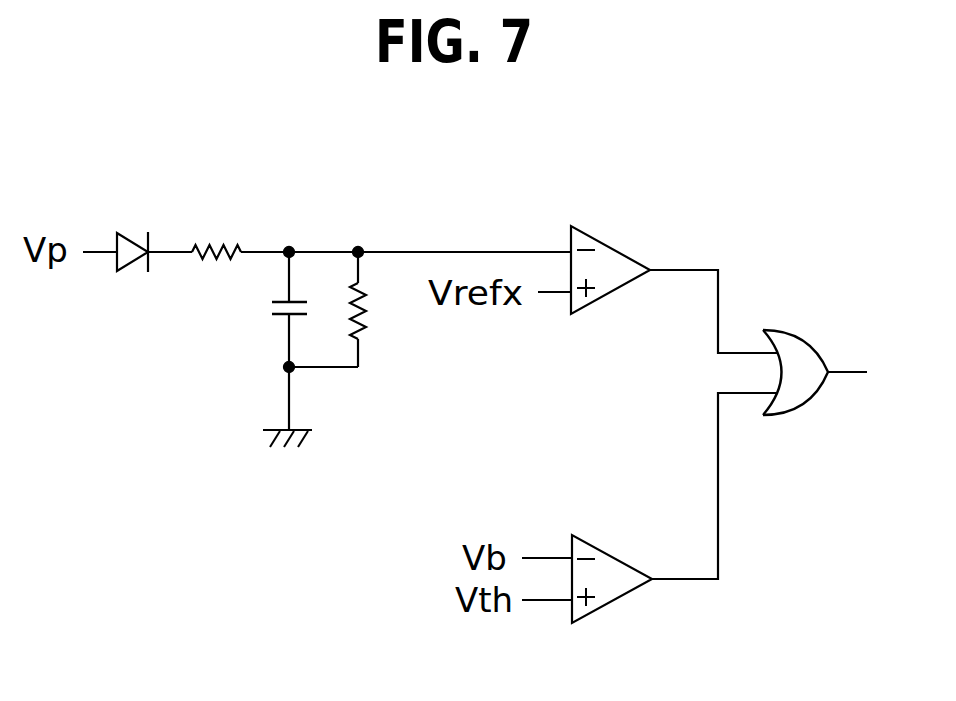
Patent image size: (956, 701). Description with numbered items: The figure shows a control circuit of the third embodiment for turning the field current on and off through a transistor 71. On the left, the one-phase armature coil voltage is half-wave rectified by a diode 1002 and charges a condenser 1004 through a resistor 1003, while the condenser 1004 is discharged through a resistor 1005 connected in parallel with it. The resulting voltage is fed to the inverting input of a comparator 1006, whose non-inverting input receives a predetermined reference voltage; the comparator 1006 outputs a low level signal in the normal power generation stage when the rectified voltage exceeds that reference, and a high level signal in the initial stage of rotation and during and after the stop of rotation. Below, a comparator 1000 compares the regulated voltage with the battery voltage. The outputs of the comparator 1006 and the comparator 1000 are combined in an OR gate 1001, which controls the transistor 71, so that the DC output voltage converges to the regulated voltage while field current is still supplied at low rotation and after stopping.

The transistor 71 is at (872, 374).
The comparator 1000 is at (615, 590).
The OR gate 1001 is at (803, 397).
The diode 1002 is at (132, 268).
The resistor 1003 is at (218, 242).
The condenser 1004 is at (272, 307).
The resistor 1005 is at (368, 310).
The comparator 1006 is at (613, 257).